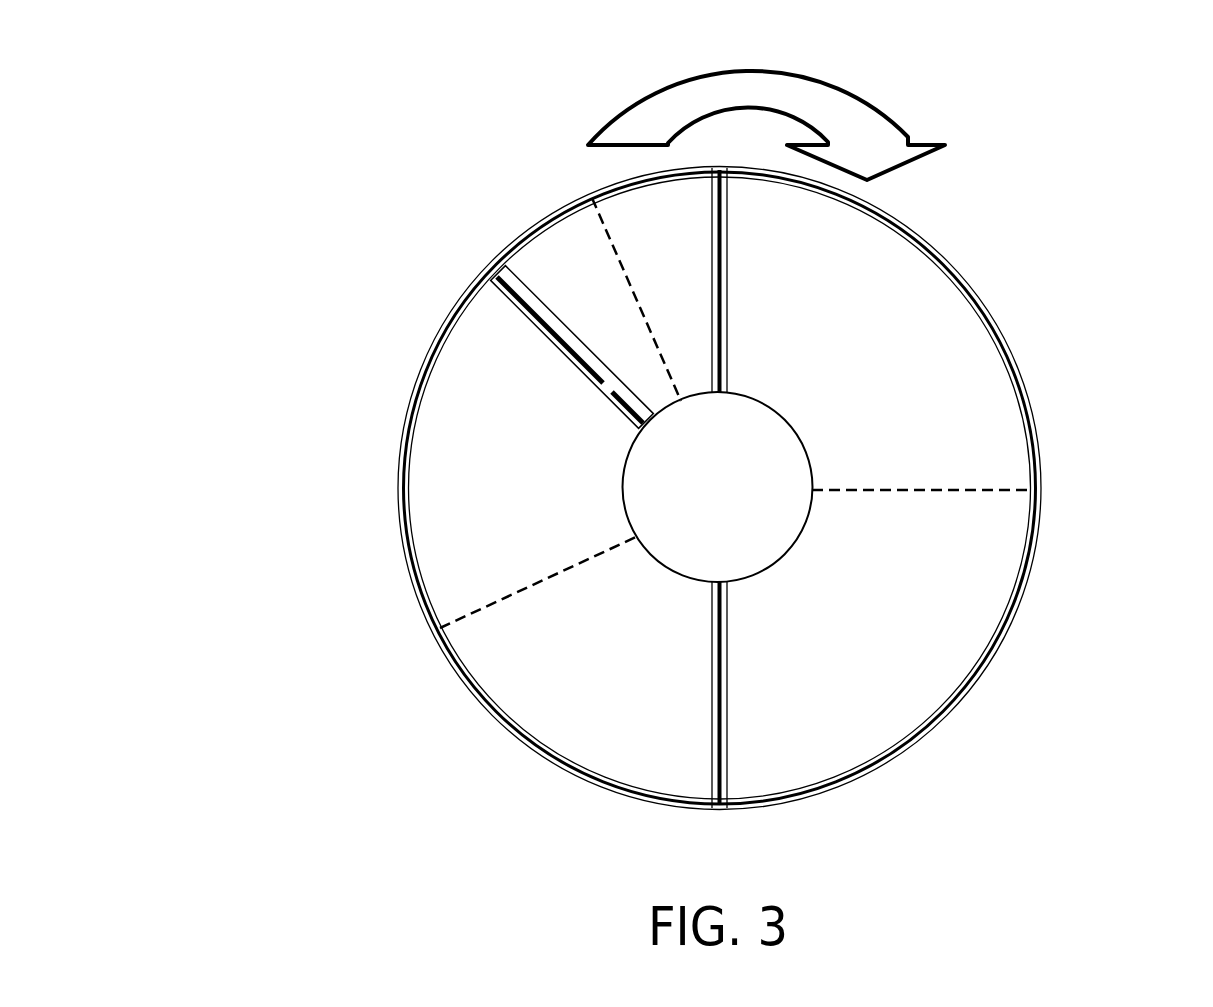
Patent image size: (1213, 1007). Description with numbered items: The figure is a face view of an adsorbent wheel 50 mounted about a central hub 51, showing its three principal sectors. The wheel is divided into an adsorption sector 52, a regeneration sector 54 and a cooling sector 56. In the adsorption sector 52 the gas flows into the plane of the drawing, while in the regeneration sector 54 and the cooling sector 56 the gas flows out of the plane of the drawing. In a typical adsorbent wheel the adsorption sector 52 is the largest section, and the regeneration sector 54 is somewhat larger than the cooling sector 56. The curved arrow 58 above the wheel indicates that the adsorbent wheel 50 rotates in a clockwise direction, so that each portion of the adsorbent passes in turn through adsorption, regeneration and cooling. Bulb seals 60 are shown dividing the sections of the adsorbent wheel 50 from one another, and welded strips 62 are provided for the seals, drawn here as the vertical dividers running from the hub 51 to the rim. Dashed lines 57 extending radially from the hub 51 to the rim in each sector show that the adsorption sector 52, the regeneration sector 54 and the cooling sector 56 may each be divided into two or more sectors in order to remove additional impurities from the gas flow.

The adsorbent wheel 50 is at (1084, 628).
The hub 51 is at (812, 468).
The adsorption sector 52 is at (913, 542).
The regeneration sector 54 is at (541, 548).
The cooling sector 56 is at (683, 293).
The dashed lines 57 is at (600, 228).
The arrow 58 is at (848, 110).
The bulb seals 60 is at (683, 393).
The welded strips 62 is at (728, 325).